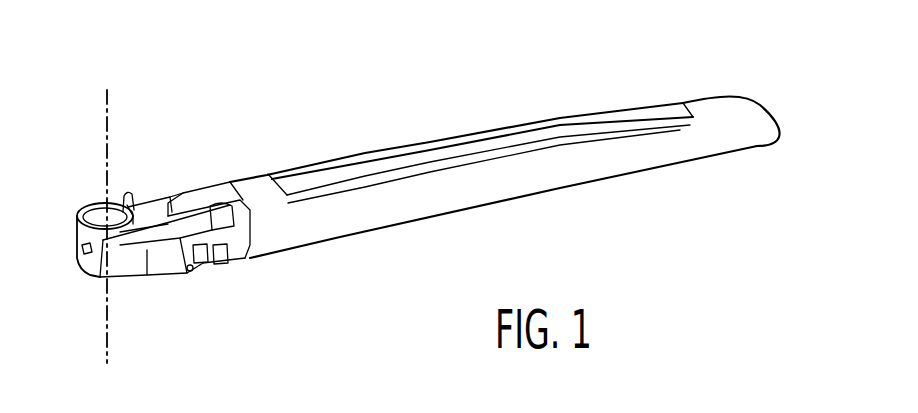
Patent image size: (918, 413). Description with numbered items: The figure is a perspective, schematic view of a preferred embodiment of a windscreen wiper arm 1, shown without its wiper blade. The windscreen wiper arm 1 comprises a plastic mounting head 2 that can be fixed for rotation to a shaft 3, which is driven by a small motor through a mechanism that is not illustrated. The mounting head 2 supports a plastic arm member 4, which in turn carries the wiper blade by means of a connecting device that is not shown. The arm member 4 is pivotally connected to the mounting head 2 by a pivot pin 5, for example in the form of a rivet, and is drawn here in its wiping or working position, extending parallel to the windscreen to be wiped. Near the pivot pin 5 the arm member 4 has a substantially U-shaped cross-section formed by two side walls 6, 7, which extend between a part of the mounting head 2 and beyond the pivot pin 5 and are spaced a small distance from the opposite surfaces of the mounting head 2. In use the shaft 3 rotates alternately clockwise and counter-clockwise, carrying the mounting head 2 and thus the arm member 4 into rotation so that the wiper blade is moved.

The windscreen wiper arm 1 is at (417, 72).
The mounting head 2 is at (98, 192).
The shaft 3 is at (107, 325).
The arm member 4 is at (497, 132).
The pivot pin 5 is at (213, 225).
The side wall 6 is at (216, 203).
The side wall 7 is at (183, 193).